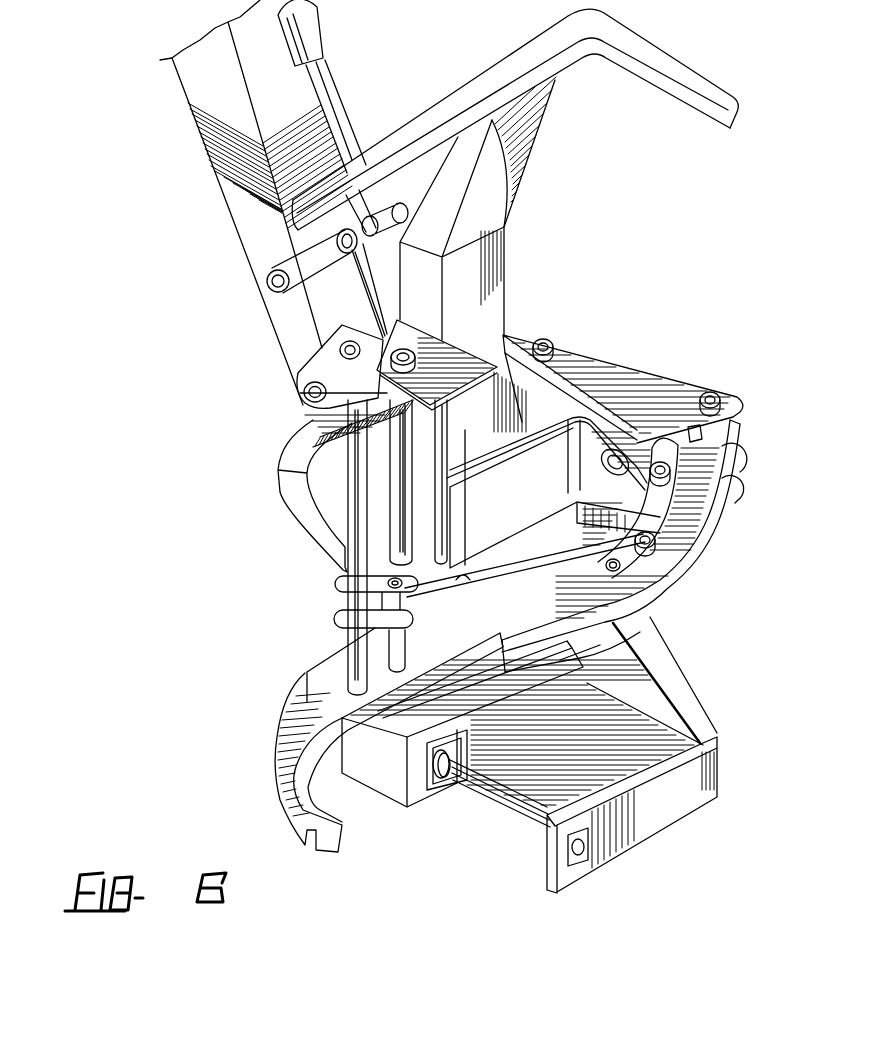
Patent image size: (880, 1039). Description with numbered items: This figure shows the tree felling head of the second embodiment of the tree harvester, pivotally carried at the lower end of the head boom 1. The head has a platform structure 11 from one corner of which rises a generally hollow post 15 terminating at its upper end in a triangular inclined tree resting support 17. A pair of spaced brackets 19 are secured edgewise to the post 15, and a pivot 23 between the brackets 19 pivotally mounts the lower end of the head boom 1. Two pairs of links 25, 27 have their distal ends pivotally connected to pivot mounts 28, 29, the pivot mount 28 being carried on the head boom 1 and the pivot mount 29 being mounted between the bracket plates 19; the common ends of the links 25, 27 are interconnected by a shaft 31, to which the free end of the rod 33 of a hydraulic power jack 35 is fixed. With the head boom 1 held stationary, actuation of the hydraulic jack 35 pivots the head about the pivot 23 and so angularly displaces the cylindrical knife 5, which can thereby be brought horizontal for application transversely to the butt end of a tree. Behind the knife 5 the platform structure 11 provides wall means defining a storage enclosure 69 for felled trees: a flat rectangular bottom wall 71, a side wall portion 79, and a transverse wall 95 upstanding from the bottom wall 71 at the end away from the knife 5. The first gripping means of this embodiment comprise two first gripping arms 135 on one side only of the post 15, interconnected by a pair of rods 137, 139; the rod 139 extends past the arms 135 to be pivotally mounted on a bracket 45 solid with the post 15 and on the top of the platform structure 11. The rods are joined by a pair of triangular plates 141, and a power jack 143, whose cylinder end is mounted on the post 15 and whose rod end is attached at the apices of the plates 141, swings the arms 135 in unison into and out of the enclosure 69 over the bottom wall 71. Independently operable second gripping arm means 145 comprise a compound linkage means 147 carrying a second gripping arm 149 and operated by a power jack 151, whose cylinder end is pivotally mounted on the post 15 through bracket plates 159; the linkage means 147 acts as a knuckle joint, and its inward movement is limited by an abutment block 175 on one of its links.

The head boom 1 is at (240, 226).
The cylindrical knife 5 is at (507, 808).
The platform structure 11 is at (296, 694).
The post 15 is at (504, 265).
The tree resting support 17 is at (690, 74).
The brackets 19 is at (332, 368).
The pivot 23 is at (303, 400).
The links 25 is at (308, 261).
The links 27 is at (357, 308).
The pivot mount 28 is at (268, 286).
The pivot mount 29 is at (352, 361).
The shaft 31 is at (345, 262).
The rod 33 is at (350, 125).
The hydraulic power jack 35 is at (326, 42).
The bracket 45 is at (437, 365).
The storage enclosure 69 is at (522, 732).
The bottom wall 71 is at (500, 717).
The side wall portion 79 is at (600, 777).
The transverse wall 95 is at (633, 681).
The first gripping arms 135 is at (284, 471).
The rod 137 is at (350, 507).
The rod 139 is at (386, 541).
The triangular plates 141 is at (343, 618).
The power jack 143 is at (473, 582).
The second gripping arm means 145 is at (694, 568).
The compound linkage means 147 is at (690, 538).
The second gripping arm 149 is at (580, 658).
The power jack 151 is at (568, 486).
The bracket plates 159 is at (665, 370).
The abutment block 175 is at (720, 432).